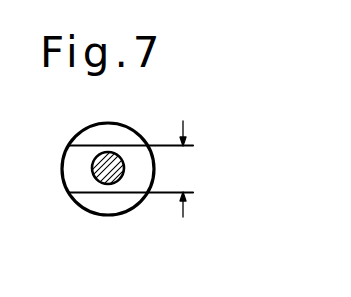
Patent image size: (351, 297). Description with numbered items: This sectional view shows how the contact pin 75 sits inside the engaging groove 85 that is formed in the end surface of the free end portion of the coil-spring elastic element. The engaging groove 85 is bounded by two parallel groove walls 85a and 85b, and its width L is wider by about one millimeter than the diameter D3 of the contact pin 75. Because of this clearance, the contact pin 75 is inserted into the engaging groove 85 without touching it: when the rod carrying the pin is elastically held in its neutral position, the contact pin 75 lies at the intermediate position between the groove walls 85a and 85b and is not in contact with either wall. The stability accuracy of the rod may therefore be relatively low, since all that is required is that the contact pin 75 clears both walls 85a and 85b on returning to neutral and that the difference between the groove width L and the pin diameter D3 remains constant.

The engaging groove 85 is at (138, 157).
The groove wall 85a is at (130, 147).
The groove wall 85b is at (139, 191).
The contact pin 75 is at (92, 163).
The diameter of the contact pin D3 is at (104, 184).
The width of the engaging groove L is at (184, 169).